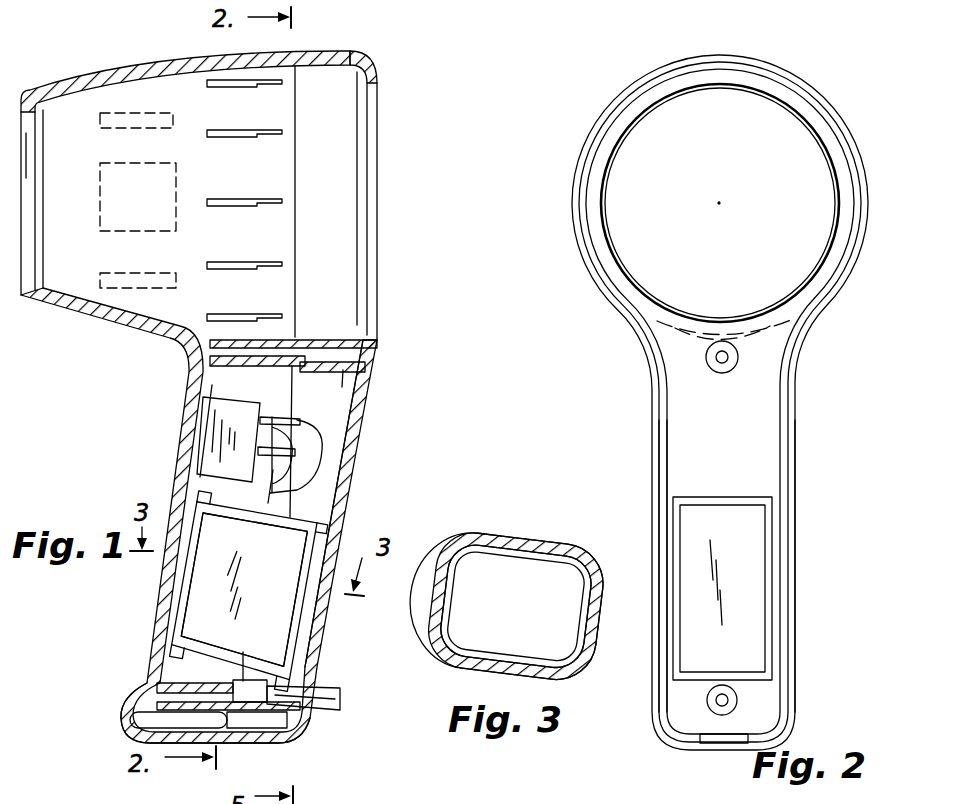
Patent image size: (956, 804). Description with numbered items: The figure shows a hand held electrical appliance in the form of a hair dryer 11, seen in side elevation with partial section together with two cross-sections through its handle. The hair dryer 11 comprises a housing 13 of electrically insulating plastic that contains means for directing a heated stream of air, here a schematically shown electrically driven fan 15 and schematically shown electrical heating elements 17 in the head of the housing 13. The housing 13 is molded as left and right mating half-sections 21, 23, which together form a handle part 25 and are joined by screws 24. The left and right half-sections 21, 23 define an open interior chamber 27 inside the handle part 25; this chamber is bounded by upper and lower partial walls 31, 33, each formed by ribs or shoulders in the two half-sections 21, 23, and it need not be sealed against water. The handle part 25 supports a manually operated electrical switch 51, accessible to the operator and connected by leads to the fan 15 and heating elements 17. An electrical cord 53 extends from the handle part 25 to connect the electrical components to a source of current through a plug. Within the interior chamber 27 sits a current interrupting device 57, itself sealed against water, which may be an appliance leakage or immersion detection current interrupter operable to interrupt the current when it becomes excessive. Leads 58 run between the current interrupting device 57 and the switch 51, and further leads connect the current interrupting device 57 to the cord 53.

In FIG. 1, the hair dryer 11 is at (126, 469).
In FIG. 1, the housing 13 is at (388, 385).
In FIG. 1, the electrically driven fan 15 is at (108, 168).
In FIG. 1, the electrical heating elements 17 is at (148, 113).
In FIG. 1, the left half-section 21 is at (153, 633).
In FIG. 1, the right half-section 23 is at (343, 540).
In FIG. 2, the right half-section 23 is at (808, 331).
In FIG. 3, the right half-section 23 is at (553, 552).
In FIG. 2, the screws 24 is at (727, 363).
In FIG. 1, the handle part 25 is at (158, 456).
In FIG. 2, the handle part 25 is at (813, 453).
In FIG. 1, the open interior chamber 27 is at (297, 480).
In FIG. 2, the open interior chamber 27 is at (673, 423).
In FIG. 3, the open interior chamber 27 is at (517, 553).
In FIG. 1, the upper partial wall 31 is at (343, 510).
In FIG. 1, the lower partial wall 33 is at (157, 667).
In FIG. 1, the manually operated electrical switch 51 is at (220, 407).
In FIG. 1, the electrical cord 53 is at (335, 686).
In FIG. 1, the current interrupting device 57 is at (195, 606).
In FIG. 2, the current interrupting device 57 is at (743, 533).
In FIG. 3, the current interrupting device 57 is at (570, 588).
In FIG. 1, the leads 58 is at (325, 445).